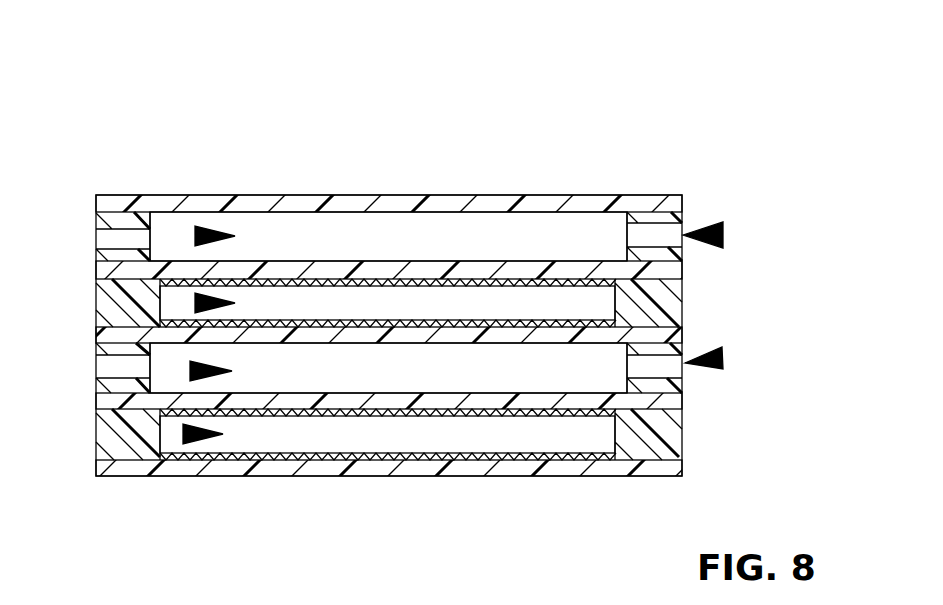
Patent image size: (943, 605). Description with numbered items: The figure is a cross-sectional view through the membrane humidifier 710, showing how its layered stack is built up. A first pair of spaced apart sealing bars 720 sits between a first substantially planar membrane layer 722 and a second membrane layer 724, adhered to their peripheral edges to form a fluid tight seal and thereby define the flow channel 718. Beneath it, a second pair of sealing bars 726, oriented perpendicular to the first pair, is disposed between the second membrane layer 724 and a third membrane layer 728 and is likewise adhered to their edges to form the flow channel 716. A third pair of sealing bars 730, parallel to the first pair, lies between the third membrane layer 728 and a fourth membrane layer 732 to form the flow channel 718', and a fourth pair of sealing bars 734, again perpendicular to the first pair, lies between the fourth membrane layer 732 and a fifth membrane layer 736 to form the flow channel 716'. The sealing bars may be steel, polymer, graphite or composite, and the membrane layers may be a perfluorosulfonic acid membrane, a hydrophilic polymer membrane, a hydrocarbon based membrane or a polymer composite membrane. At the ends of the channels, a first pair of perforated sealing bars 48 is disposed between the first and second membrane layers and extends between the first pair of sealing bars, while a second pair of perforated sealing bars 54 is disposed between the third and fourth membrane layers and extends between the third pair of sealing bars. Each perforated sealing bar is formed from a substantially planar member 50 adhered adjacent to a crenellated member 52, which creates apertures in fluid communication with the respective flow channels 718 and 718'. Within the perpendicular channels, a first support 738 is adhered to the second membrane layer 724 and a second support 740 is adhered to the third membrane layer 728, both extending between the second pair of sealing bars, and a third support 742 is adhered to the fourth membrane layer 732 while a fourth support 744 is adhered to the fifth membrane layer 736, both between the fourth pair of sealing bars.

The membrane humidifier 710 is at (136, 89).
The flow channel 716 is at (317, 303).
The flow channel 716' is at (310, 434).
The flow channel 718 is at (127, 236).
The flow channel 718' is at (118, 368).
The first pair of sealing bars 720 is at (371, 248).
The first membrane layer 722 is at (648, 207).
The second membrane layer 724 is at (650, 271).
The second pair of sealing bars 726 is at (653, 297).
The third membrane layer 728 is at (683, 322).
The third pair of sealing bars 730 is at (371, 381).
The fourth membrane layer 732 is at (672, 400).
The fourth pair of sealing bars 734 is at (635, 444).
The fifth membrane layer 736 is at (667, 465).
The first support 738 is at (262, 280).
The second support 740 is at (318, 322).
The third support 742 is at (310, 416).
The fourth support 744 is at (208, 455).
The first pair of perforated sealing bars 48 is at (723, 234).
The substantially planar member 50 is at (682, 219).
The crenellated member 52 is at (678, 253).
The second pair of perforated sealing bars 54 is at (722, 353).